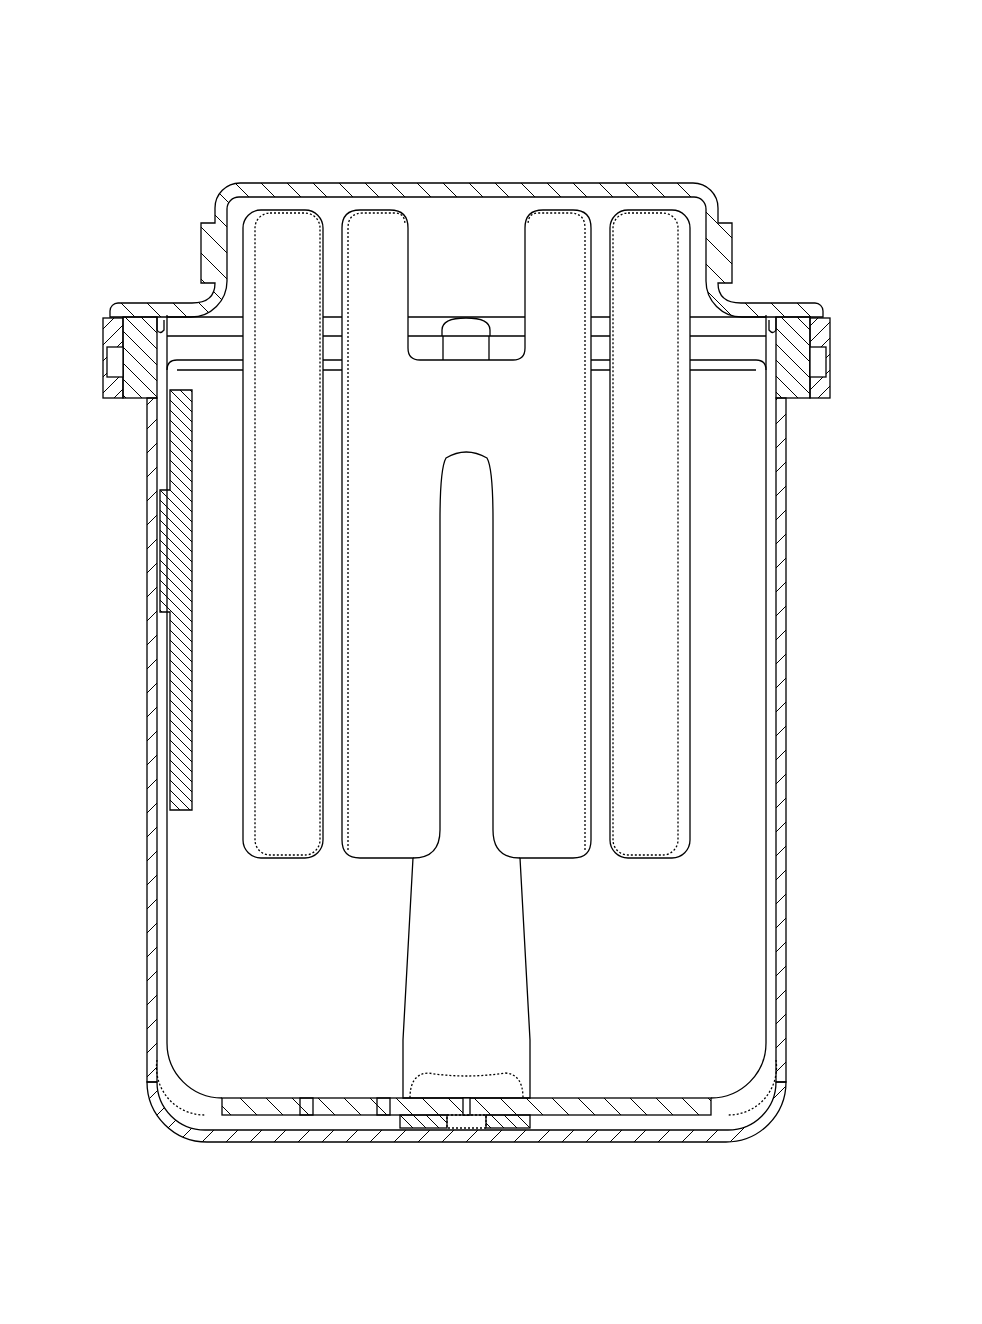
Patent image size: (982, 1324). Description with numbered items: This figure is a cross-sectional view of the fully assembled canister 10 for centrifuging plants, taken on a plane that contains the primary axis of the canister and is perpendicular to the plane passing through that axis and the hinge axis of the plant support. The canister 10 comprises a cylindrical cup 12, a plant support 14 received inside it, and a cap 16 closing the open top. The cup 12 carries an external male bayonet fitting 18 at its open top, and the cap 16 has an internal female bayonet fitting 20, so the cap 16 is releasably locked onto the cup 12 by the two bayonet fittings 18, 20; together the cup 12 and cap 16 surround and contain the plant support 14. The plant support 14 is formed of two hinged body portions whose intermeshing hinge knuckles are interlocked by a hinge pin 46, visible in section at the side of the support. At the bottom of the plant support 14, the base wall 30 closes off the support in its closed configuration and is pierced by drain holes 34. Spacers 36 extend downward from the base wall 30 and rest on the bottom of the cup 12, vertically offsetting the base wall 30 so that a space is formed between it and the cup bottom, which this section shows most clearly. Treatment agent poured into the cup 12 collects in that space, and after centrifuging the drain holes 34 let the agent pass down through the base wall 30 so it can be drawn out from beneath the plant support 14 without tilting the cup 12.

The canister 10 is at (328, 70).
The cup 12 is at (790, 1043).
The plant support 14 is at (742, 1090).
The cap 16 is at (703, 204).
The external male bayonet fitting 18 is at (118, 362).
The internal female bayonet fitting 20 is at (117, 345).
The base wall 30 is at (602, 1108).
The drain holes 34 is at (385, 1110).
The spacers 36 is at (416, 1122).
The hinge pin 46 is at (177, 558).